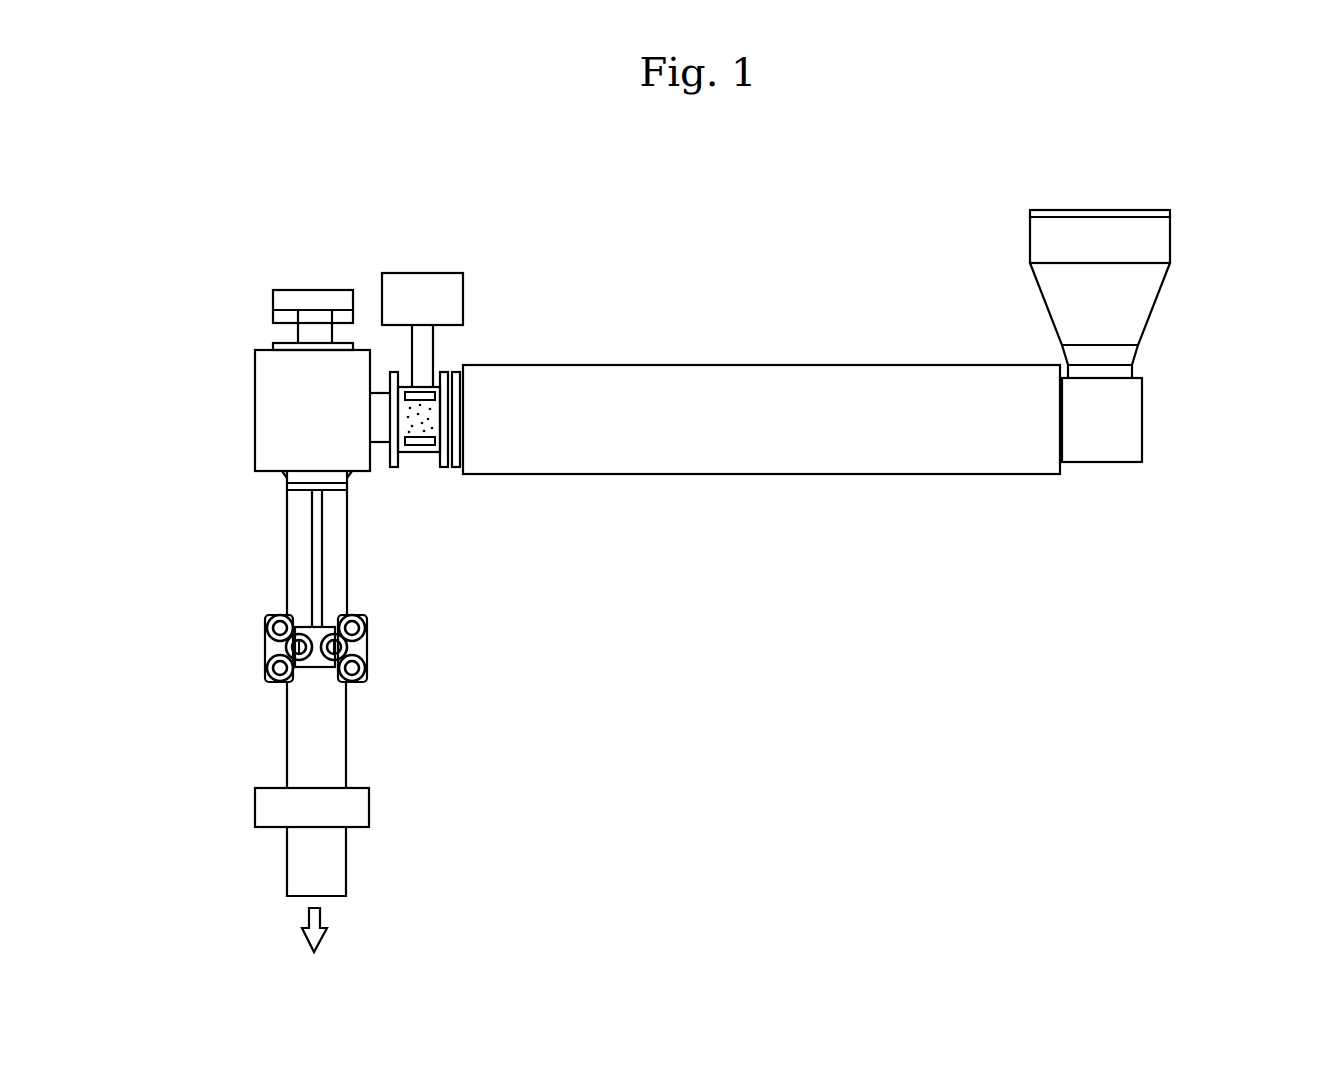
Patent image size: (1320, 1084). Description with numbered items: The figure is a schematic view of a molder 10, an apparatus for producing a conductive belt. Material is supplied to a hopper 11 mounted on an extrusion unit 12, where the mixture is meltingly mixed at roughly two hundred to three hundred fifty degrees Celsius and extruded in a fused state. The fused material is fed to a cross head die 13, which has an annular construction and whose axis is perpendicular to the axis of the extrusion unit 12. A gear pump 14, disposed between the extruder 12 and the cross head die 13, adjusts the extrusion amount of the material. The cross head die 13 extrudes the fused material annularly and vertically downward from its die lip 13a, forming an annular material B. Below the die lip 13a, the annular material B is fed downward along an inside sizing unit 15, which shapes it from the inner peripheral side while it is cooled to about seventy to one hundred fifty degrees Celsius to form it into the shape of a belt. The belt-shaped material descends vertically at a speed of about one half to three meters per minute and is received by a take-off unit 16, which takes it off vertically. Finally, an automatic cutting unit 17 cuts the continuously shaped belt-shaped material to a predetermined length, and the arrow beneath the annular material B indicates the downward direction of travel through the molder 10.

The molder 10 is at (221, 230).
The hopper 11 is at (1120, 302).
The extrusion unit 12 is at (668, 398).
The cross head die 13 is at (313, 347).
The die lip 13a is at (285, 477).
The gear pump 14 is at (435, 288).
The inside sizing unit 15 is at (330, 486).
The take-off unit 16 is at (298, 677).
The automatic cutting unit 17 is at (363, 810).
The annular material B is at (293, 868).